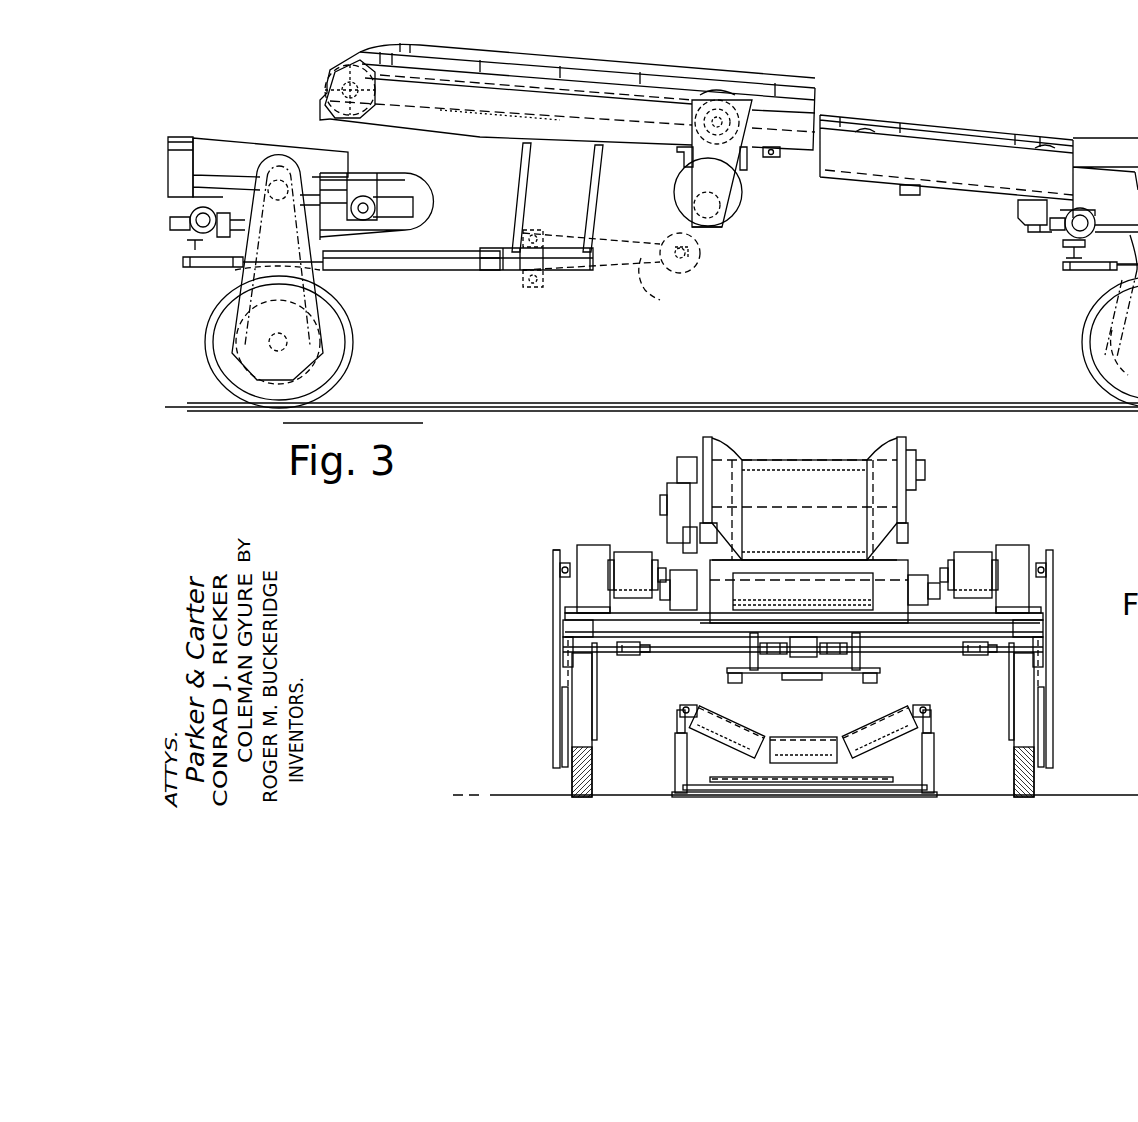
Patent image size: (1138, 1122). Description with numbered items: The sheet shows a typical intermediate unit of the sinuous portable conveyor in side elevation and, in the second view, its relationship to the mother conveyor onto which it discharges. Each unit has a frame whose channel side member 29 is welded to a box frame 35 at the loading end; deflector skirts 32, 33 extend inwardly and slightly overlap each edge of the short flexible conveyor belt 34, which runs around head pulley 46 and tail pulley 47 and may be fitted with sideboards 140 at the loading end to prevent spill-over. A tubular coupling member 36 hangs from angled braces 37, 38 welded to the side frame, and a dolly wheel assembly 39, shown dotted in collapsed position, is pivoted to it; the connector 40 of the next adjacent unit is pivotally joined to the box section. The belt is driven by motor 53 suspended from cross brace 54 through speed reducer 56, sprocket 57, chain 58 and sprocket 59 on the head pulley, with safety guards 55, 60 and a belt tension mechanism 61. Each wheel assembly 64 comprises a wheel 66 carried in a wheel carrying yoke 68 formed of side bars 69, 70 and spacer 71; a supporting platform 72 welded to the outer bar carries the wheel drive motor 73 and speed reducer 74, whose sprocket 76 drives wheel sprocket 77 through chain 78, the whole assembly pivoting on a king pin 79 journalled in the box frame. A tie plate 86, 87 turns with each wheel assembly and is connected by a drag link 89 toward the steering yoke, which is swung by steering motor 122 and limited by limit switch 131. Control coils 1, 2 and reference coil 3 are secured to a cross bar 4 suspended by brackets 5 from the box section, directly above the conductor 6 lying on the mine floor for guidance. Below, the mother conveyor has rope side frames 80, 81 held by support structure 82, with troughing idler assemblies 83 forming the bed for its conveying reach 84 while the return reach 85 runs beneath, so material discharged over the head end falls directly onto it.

In FIG. 4, the control coil 1 is at (735, 674).
In FIG. 4, the control coil 2 is at (870, 683).
In FIG. 4, the reference coil 3 is at (805, 678).
In FIG. 4, the cross bar 4 is at (845, 674).
In FIG. 4, the brackets 5 is at (870, 652).
In FIG. 3, the conductor 6 is at (596, 407).
In FIG. 4, the conductor 6 is at (795, 795).
In FIG. 3, the side member 29 is at (955, 185).
In FIG. 4, the deflector skirt 32 is at (735, 455).
In FIG. 4, the deflector skirt 33 is at (882, 455).
In FIG. 4, the conveyor belt 34 is at (840, 538).
In FIG. 3, the box frame 35 is at (1137, 245).
In FIG. 4, the box frame 35 is at (657, 637).
In FIG. 3, the tubular coupling member 36 is at (572, 285).
In FIG. 3, the angled brace 37 is at (515, 203).
In FIG. 3, the angled brace 38 is at (590, 200).
In FIG. 3, the dolly wheel assembly 39 is at (611, 271).
In FIG. 3, the connector 40 is at (408, 272).
In FIG. 3, the head pulley 46 is at (340, 70).
In FIG. 4, the head pulley 46 is at (918, 452).
In FIG. 4, the tail pulley 47 is at (888, 583).
In FIG. 3, the motor 53 is at (740, 185).
In FIG. 3, the cross brace 54 is at (750, 158).
In FIG. 3, the safety guard 55 is at (720, 236).
In FIG. 4, the safety guard 55 is at (672, 495).
In FIG. 3, the speed reducer 56 is at (738, 222).
In FIG. 3, the sprocket 57 is at (732, 100).
In FIG. 3, the chain 58 is at (558, 85).
In FIG. 3, the sprocket 59 is at (398, 70).
In FIG. 3, the safety guard 60 is at (496, 135).
In FIG. 4, the safety guard 60 is at (688, 455).
In FIG. 4, the belt tension mechanism 61 is at (685, 575).
In FIG. 3, the wheel assembly 64 is at (385, 358).
In FIG. 4, the wheel assembly 64 is at (525, 750).
In FIG. 4, the wheel 66 is at (592, 785).
In FIG. 4, the wheel carrying yoke 68 is at (535, 637).
In FIG. 4, the side bar 69 is at (553, 706).
In FIG. 4, the side bar 70 is at (598, 712).
In FIG. 4, the spacer 71 is at (563, 650).
In FIG. 4, the supporting platform 72 is at (580, 610).
In FIG. 4, the wheel drive motor 73 is at (633, 550).
In FIG. 4, the speed reducer 74 is at (593, 548).
In FIG. 4, the sprocket 76 is at (563, 562).
In FIG. 3, the wheel sprocket 77 is at (1108, 378).
In FIG. 4, the wheel sprocket 77 is at (560, 775).
In FIG. 3, the chain 78 is at (1130, 316).
In FIG. 4, the king pin 79 is at (558, 642).
In FIG. 4, the rope side frame 80 is at (678, 708).
In FIG. 4, the rope side frame 81 is at (928, 710).
In FIG. 4, the support structure 82 is at (655, 768).
In FIG. 4, the troughing idler assembly 83 is at (922, 732).
In FIG. 4, the conveying reach 84 is at (785, 737).
In FIG. 4, the return reach 85 is at (860, 777).
In FIG. 4, the tie plate 86 is at (978, 657).
In FIG. 4, the tie plate 87 is at (605, 657).
In FIG. 3, the drag link 89 is at (1110, 270).
In FIG. 3, the steering motor 122 is at (1078, 208).
In FIG. 3, the limit switch 131 is at (1030, 230).
In FIG. 3, the sideboards 140 is at (1088, 145).